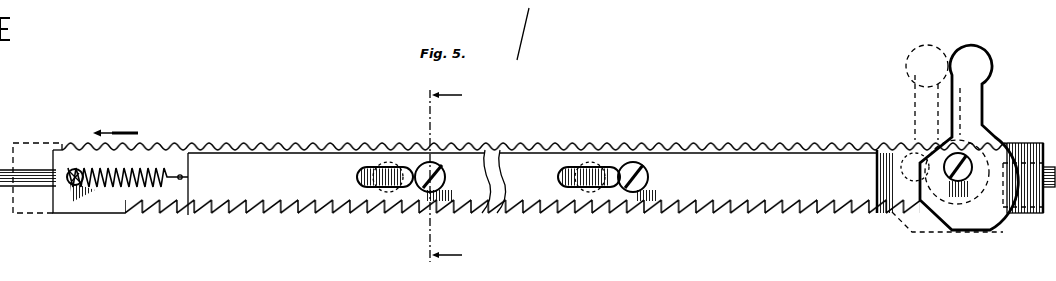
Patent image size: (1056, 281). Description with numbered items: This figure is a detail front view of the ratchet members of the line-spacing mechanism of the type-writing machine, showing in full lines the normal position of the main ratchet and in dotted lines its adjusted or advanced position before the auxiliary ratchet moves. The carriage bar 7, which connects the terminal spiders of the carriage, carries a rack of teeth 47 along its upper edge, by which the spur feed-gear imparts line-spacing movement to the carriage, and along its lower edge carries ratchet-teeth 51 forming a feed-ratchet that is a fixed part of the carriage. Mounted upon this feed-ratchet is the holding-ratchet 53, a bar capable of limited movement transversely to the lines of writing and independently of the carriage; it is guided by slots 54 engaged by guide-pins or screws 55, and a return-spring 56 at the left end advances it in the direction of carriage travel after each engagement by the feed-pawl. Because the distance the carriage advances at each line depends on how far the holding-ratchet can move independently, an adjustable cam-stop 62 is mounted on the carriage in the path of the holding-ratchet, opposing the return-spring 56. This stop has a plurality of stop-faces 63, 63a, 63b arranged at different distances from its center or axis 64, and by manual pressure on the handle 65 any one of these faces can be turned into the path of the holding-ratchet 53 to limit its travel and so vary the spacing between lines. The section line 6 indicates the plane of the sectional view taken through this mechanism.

The section line 6 6 is at (443, 175).
The bar 7 is at (173, 160).
The teeth 47 is at (517, 147).
The ratchet-teeth 51 is at (156, 206).
The holding-ratchet 53 is at (305, 183).
The slots 54 is at (379, 167).
The guide-pins or screws 55 is at (436, 166).
The return-spring 56 is at (110, 186).
The cam-stop 62 is at (971, 124).
The stop-face 63 is at (932, 149).
The stop-face 63a is at (947, 130).
The stop-face 63b is at (935, 217).
The center or axis 64 is at (959, 177).
The handle 65 is at (976, 62).